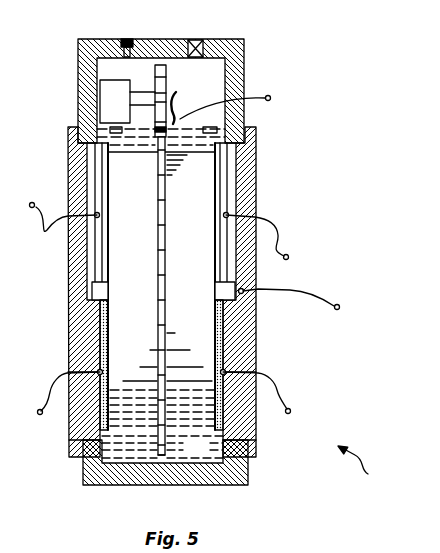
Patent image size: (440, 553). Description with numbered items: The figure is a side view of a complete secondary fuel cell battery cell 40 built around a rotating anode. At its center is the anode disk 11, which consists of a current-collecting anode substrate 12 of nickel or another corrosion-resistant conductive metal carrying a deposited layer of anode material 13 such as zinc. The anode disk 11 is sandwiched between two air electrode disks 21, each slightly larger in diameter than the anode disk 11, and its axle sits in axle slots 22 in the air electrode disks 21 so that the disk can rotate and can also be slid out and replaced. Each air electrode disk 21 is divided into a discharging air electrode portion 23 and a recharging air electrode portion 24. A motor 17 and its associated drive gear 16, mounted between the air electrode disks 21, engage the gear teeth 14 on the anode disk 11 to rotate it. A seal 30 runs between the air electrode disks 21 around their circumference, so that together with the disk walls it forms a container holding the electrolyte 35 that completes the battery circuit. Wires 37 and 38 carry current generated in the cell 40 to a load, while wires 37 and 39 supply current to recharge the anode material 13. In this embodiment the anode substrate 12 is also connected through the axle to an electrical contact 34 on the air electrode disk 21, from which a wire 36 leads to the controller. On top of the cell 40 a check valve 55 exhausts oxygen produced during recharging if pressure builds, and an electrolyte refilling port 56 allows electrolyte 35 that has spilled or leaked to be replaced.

The anode disk 11 is at (178, 280).
The current-collecting anode substrate 12 is at (157, 244).
The anode material 13 is at (123, 202).
The gear teeth 14 is at (167, 457).
The drive gear 16 is at (176, 92).
The motor 17 is at (104, 112).
The air electrode disk 21 is at (70, 438).
The axle slot 22 is at (93, 272).
The discharging air electrode portion 23 is at (103, 347).
The recharging air electrode portion 24 is at (78, 181).
The seal 30 is at (77, 58).
The electrical contact 34 is at (244, 293).
The electrolyte 35 is at (204, 134).
The wire 36 is at (330, 304).
The wire 37 is at (268, 95).
The wire 38 is at (65, 373).
The wire 39 is at (47, 230).
The fuel cell battery cell 40 is at (363, 467).
The check valve 55 is at (124, 40).
The electrolyte refilling port 56 is at (198, 40).